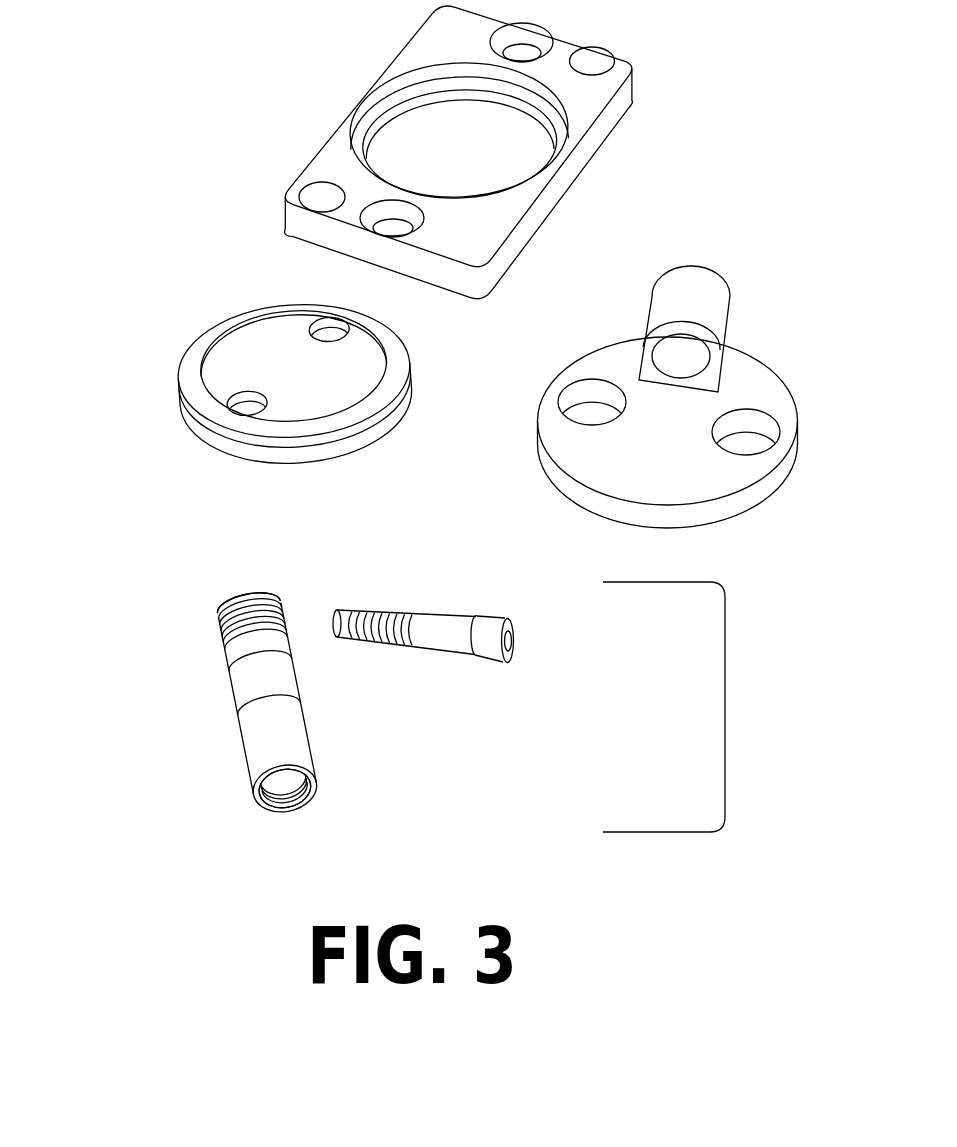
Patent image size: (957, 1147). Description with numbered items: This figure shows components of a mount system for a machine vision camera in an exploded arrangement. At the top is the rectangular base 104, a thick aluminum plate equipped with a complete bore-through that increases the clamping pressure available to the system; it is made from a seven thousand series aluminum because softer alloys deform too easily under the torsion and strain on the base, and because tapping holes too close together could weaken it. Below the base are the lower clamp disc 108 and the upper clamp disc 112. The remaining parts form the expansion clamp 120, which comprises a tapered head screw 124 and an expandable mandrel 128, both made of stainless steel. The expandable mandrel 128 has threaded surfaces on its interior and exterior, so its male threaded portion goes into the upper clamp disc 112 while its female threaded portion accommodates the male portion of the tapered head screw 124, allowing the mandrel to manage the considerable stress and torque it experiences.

The rectangular base 104 is at (449, 152).
The lower clamp disc 108 is at (295, 396).
The upper clamp disc 112 is at (701, 397).
The expansion clamp 120 is at (725, 695).
The tapered head screw 124 is at (471, 649).
The expandable mandrel 128 is at (391, 702).